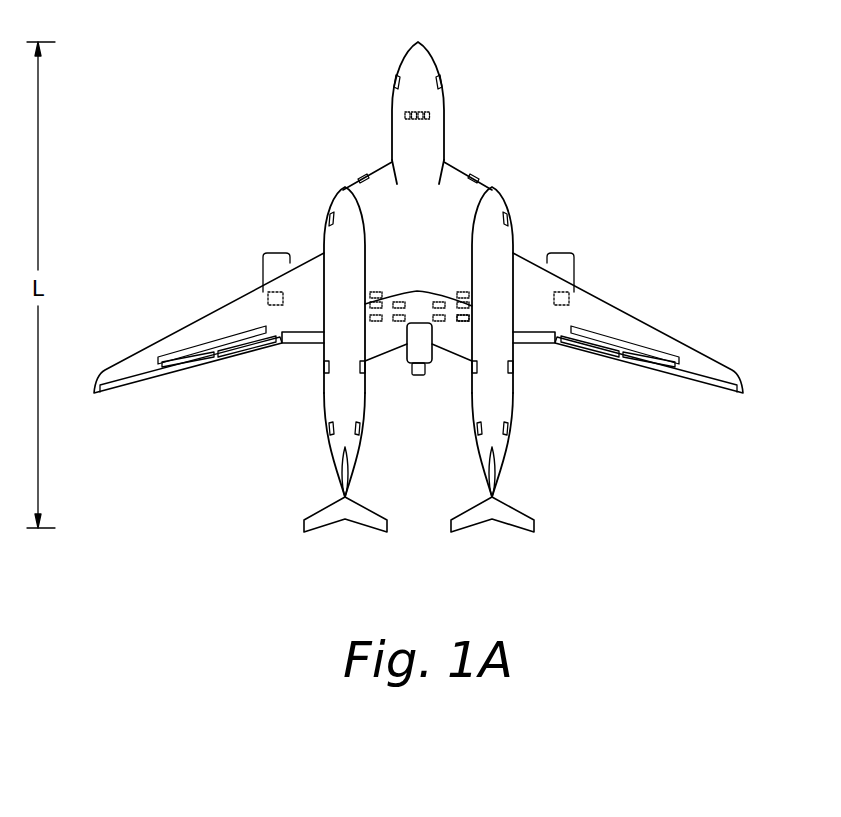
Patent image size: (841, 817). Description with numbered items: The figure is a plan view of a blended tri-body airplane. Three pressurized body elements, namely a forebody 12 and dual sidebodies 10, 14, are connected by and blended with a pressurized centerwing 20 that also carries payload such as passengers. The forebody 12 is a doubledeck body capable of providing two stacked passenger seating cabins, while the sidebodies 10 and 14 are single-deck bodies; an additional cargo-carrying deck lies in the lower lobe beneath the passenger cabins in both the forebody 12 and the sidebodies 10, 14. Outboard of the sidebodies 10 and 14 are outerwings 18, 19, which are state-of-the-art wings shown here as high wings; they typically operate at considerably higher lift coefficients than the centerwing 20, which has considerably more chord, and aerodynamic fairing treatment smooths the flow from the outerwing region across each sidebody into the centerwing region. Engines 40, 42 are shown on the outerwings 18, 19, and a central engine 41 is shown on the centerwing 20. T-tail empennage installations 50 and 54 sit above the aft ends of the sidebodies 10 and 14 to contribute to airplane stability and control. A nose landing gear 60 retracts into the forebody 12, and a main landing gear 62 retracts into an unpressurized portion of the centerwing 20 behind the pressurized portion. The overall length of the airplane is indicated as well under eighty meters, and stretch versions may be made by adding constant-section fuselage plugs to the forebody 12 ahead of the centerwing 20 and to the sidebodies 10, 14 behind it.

The sidebody 10 is at (324, 392).
The forebody 12 is at (433, 53).
The sidebody 14 is at (472, 416).
The outerwing 18 is at (205, 318).
The right wing portion 19 is at (702, 348).
The centerwing 20 is at (432, 257).
The left engine 40 is at (278, 258).
The central engine 41 is at (433, 362).
The right engine 42 is at (563, 258).
The T-tail empennage installation 50 is at (343, 521).
The T-tail empennage installation 54 is at (500, 521).
The nose landing gear 60 is at (400, 116).
The main landing gear 62 is at (468, 313).